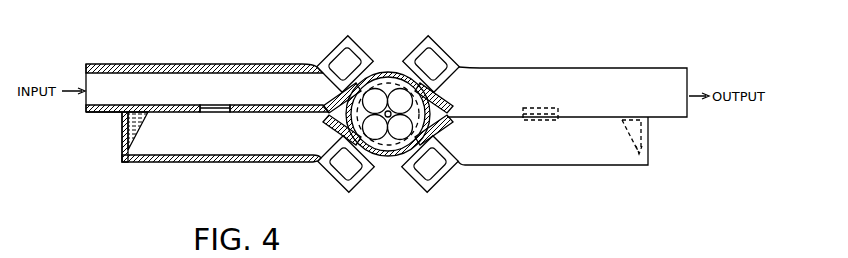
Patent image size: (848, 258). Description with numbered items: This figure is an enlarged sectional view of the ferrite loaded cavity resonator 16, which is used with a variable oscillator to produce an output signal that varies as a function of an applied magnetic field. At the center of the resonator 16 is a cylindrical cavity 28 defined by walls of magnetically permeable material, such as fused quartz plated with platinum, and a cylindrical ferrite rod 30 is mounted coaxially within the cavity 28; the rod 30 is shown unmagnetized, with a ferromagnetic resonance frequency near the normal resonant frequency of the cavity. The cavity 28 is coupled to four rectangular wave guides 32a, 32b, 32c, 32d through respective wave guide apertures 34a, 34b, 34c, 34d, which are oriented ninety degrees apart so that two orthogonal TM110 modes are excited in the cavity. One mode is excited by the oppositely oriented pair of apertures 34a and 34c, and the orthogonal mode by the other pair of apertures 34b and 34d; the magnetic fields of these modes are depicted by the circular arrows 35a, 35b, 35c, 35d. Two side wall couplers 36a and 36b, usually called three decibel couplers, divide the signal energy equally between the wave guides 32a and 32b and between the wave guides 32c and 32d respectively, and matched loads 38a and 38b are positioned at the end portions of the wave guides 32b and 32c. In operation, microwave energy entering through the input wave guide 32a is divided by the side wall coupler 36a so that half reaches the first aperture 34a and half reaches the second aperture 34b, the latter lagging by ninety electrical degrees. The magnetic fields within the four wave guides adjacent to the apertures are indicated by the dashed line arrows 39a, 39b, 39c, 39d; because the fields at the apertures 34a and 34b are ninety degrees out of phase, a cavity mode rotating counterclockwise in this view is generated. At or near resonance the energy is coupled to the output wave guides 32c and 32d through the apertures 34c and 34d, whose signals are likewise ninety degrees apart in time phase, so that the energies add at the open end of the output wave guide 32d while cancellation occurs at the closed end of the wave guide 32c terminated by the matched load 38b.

The ferrite loaded cavity resonator 16 is at (201, 194).
The cylindrical cavity 28 is at (386, 72).
The cylindrical ferrite rod 30 is at (386, 122).
The input wave guide 32a is at (110, 64).
The wave guide 32b is at (145, 162).
The output wave guide 32c is at (588, 166).
The open ended output wave guide 32d is at (676, 67).
The first cavity aperture 34a is at (343, 97).
The second cavity aperture 34b is at (336, 138).
The output aperture 34c is at (434, 142).
The output aperture 34d is at (438, 92).
The circular arrow 35a is at (360, 66).
The circular arrow 35b is at (378, 168).
The circular arrow 35c is at (398, 168).
The circular arrow 35d is at (395, 70).
The side wall coupler 36a is at (206, 106).
The side wall coupler 36b is at (533, 106).
The matched load 38a is at (125, 143).
The matched load 38b is at (650, 142).
The dashed line arrow 39a is at (318, 60).
The dashed line arrow 39b is at (316, 170).
The dashed line arrow 39c is at (456, 168).
The dashed line arrow 39d is at (452, 62).